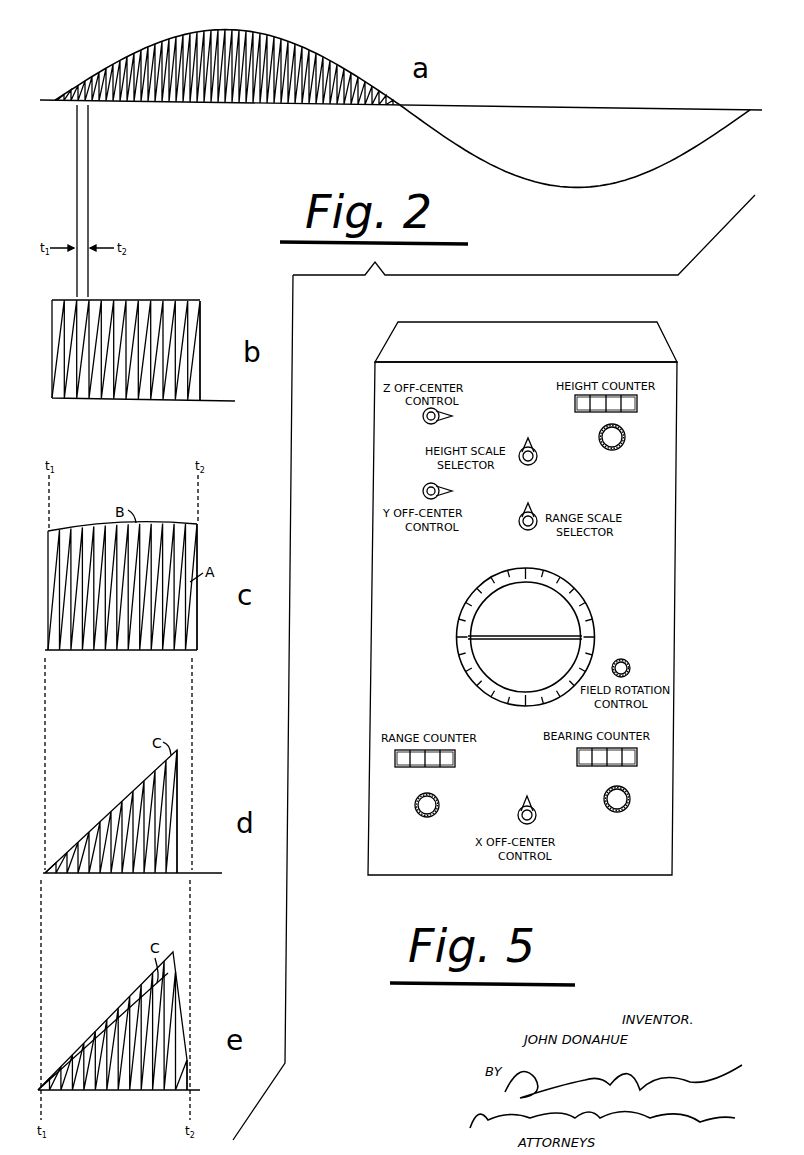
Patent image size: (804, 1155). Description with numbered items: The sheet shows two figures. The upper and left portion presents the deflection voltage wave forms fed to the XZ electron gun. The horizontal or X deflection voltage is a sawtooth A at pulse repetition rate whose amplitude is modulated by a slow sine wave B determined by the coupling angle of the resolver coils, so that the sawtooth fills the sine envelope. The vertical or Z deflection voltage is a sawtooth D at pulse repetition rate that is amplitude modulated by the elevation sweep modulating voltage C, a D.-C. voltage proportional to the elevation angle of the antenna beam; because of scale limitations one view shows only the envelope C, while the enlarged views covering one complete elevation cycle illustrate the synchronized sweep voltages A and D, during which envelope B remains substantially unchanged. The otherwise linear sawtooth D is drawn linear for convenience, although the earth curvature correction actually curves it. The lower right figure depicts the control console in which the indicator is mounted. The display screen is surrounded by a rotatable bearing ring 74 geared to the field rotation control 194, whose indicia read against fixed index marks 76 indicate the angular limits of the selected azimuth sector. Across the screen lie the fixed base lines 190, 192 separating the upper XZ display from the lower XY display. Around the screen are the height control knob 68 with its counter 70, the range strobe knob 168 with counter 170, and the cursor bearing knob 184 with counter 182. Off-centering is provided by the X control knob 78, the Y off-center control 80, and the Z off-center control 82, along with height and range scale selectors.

In FIG. 5, the Z off-center control 82 is at (423, 418).
In FIG. 5, the counter 70 is at (637, 409).
In FIG. 5, the control knob 68 is at (614, 446).
In FIG. 5, the Y off-center control 80 is at (424, 487).
In FIG. 5, the bearing ring 74 is at (583, 598).
In FIG. 5, the fixed index marks 76 is at (440, 636).
In FIG. 5, the fixed horizontal base line 190 is at (567, 635).
In FIG. 5, the fixed base line 192 is at (550, 643).
In FIG. 5, the field rotation control 194 is at (628, 661).
In FIG. 5, the counter 170 is at (455, 766).
In FIG. 5, the counter 182 is at (577, 759).
In FIG. 5, the knob 168 is at (436, 805).
In FIG. 5, the control knob 78 is at (534, 813).
In FIG. 5, the knob 184 is at (621, 805).
In FIG. 2, the sawtooth A is at (106, 97).
In FIG. 2, the sine wave B is at (163, 40).
In FIG. 2, the elevation sweep modulating voltage C is at (190, 323).
In FIG. 2, the sawtooth voltage D is at (174, 805).
In FIG. 2, the waveform E is at (170, 1014).
In FIG. 2, the waveform F is at (95, 1022).